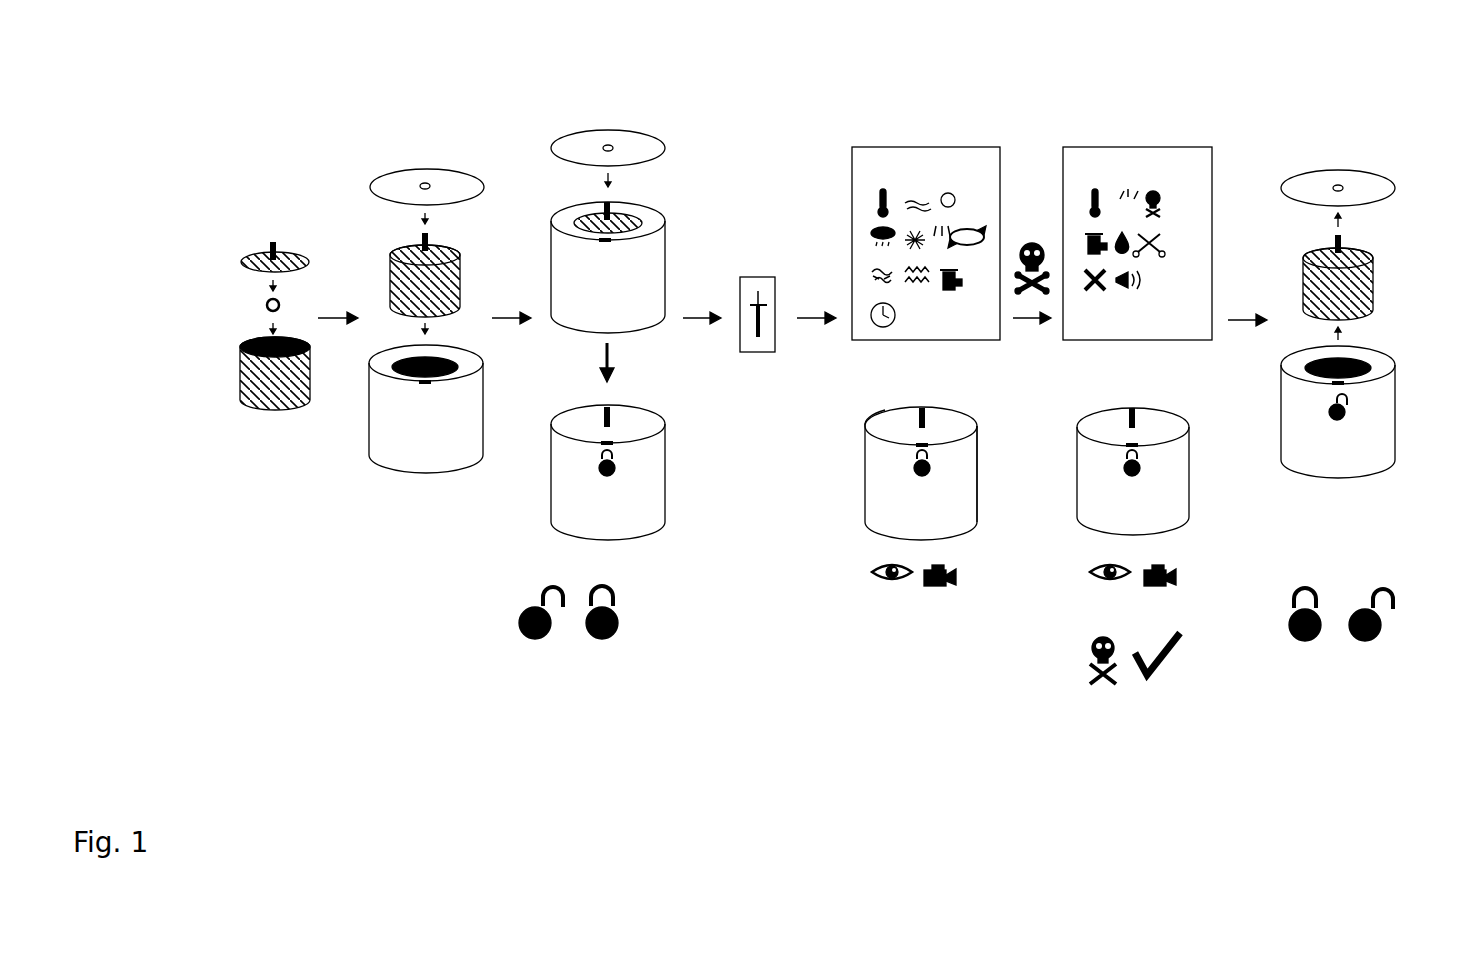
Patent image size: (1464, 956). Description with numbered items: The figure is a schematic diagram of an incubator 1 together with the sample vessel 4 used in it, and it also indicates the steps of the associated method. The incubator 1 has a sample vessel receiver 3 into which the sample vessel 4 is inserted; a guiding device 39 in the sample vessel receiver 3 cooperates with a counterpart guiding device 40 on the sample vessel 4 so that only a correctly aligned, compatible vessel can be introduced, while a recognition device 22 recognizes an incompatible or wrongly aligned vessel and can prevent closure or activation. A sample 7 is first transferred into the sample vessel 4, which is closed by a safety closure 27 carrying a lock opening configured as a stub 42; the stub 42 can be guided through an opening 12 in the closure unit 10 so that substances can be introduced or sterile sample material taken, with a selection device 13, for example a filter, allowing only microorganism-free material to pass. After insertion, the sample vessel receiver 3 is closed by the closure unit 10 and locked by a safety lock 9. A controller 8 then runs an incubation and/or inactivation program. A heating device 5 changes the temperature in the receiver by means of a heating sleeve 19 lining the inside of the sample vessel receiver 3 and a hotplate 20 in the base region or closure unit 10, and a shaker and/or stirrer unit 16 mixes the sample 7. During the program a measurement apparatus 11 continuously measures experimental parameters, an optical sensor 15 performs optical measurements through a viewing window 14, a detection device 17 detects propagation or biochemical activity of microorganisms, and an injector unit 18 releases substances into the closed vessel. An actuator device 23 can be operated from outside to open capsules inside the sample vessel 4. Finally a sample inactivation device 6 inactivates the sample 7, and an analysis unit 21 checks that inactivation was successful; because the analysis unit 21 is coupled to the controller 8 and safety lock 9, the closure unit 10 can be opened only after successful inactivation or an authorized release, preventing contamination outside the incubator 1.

The incubator 1 is at (853, 316).
The sample vessel receiver 3 is at (890, 200).
The sample vessel 4 is at (240, 388).
The heating device 5 is at (658, 459).
The sample inactivation device 6 is at (1053, 151).
The sample 7 is at (267, 305).
The controller 8 is at (762, 238).
The safety lock 9 is at (600, 468).
The closure unit 10 is at (390, 187).
The measurement apparatus 11 is at (932, 590).
The opening 12 is at (876, 106).
The selection device 13 is at (425, 183).
The viewing window 14 is at (382, 413).
The optical sensor 15 is at (890, 583).
The shaker and/or stirrer unit 16 is at (562, 328).
The detection device 17 is at (1085, 471).
The injector unit 18 is at (1066, 484).
The heating sleeve 19 is at (657, 473).
The hotplate 20 is at (1041, 630).
The analysis unit 21 is at (1067, 405).
The recognition device 22 is at (633, 240).
The actuator device 23 is at (868, 420).
The safety closure 27 is at (247, 263).
The guiding device 39 is at (393, 372).
The counterpart guiding device 40 is at (403, 300).
The stub 42 is at (270, 253).